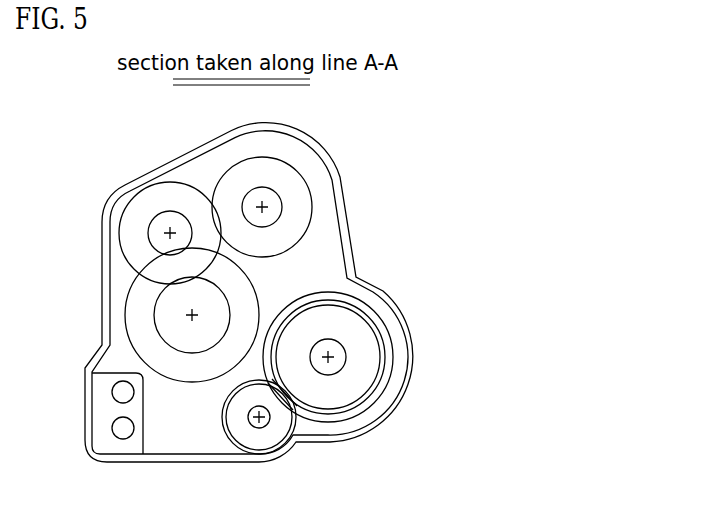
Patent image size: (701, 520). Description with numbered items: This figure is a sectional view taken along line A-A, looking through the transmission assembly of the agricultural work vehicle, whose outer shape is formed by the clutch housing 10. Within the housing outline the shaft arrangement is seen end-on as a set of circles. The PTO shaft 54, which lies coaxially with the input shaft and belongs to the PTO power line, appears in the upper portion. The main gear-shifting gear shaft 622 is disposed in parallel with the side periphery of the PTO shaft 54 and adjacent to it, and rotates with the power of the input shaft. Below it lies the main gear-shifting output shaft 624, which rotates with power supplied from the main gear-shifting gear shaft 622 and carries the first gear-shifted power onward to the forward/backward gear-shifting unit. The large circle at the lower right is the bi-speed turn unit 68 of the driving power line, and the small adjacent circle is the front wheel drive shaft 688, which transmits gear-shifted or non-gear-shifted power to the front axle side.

The clutch housing 10 is at (315, 142).
The PTO shaft 54 is at (282, 204).
The main gear-shifting gear shaft 622 is at (124, 211).
The main gear-shifting output shaft 624 is at (160, 289).
The bi-speed turn unit 68 is at (387, 353).
The front wheel drive shaft 688 is at (303, 427).